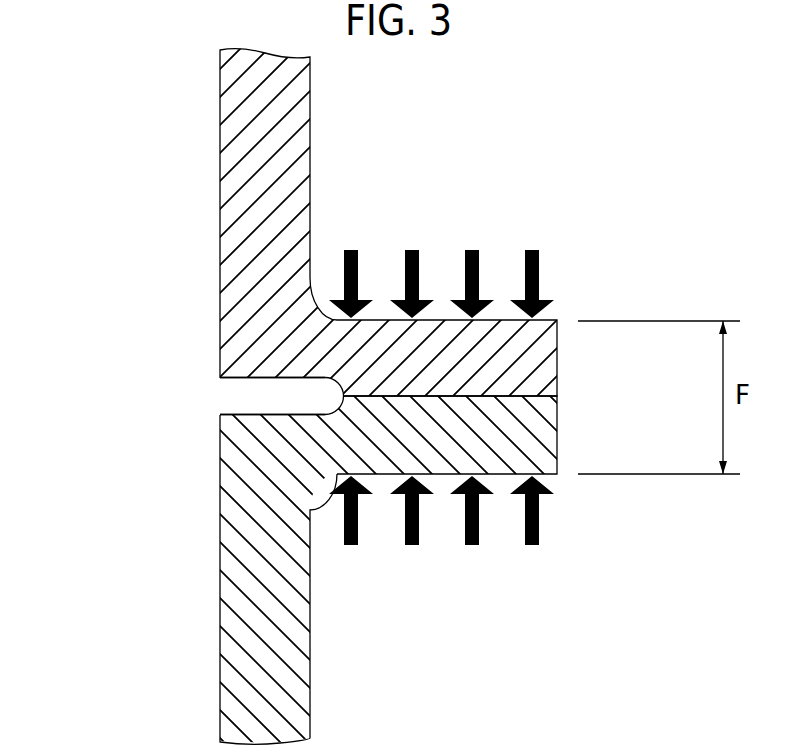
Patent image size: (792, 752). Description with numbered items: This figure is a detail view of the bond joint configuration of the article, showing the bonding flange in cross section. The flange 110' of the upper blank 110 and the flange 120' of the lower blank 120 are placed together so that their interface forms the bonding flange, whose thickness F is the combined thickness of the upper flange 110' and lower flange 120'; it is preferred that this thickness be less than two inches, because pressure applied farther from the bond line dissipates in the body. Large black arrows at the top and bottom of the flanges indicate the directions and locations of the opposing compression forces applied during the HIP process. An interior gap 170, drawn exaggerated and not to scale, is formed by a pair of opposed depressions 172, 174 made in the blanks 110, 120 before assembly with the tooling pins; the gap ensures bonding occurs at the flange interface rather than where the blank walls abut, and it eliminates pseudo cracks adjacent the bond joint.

The upper blank 110 is at (396, 376).
The flange of the upper blank 110' is at (512, 358).
The lower blank 120 is at (396, 376).
The flange of the lower blank 120' is at (512, 435).
The interior gap 170 is at (226, 395).
The depression 172 is at (228, 381).
The depression 174 is at (228, 413).